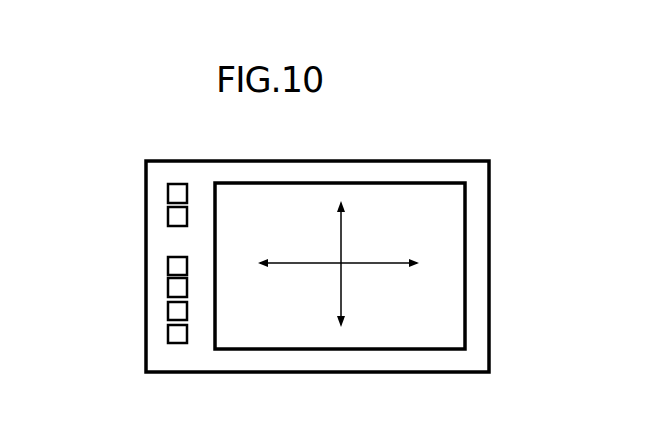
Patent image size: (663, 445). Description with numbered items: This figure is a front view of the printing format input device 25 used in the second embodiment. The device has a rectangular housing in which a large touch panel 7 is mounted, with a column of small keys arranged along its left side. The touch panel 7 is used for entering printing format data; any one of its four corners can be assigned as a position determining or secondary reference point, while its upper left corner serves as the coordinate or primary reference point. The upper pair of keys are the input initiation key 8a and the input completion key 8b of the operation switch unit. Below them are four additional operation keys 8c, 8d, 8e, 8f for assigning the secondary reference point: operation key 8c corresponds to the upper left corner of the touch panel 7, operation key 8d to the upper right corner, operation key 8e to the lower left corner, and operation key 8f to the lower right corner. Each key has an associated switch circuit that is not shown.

The printing format input device 25 is at (489, 183).
The touch panel 7 is at (458, 328).
The input initiation key 8a is at (168, 195).
The input completion key 8b is at (168, 221).
The operation key 8c is at (168, 265).
The operation key 8d is at (168, 293).
The operation key 8e is at (168, 317).
The operation key 8f is at (168, 343).